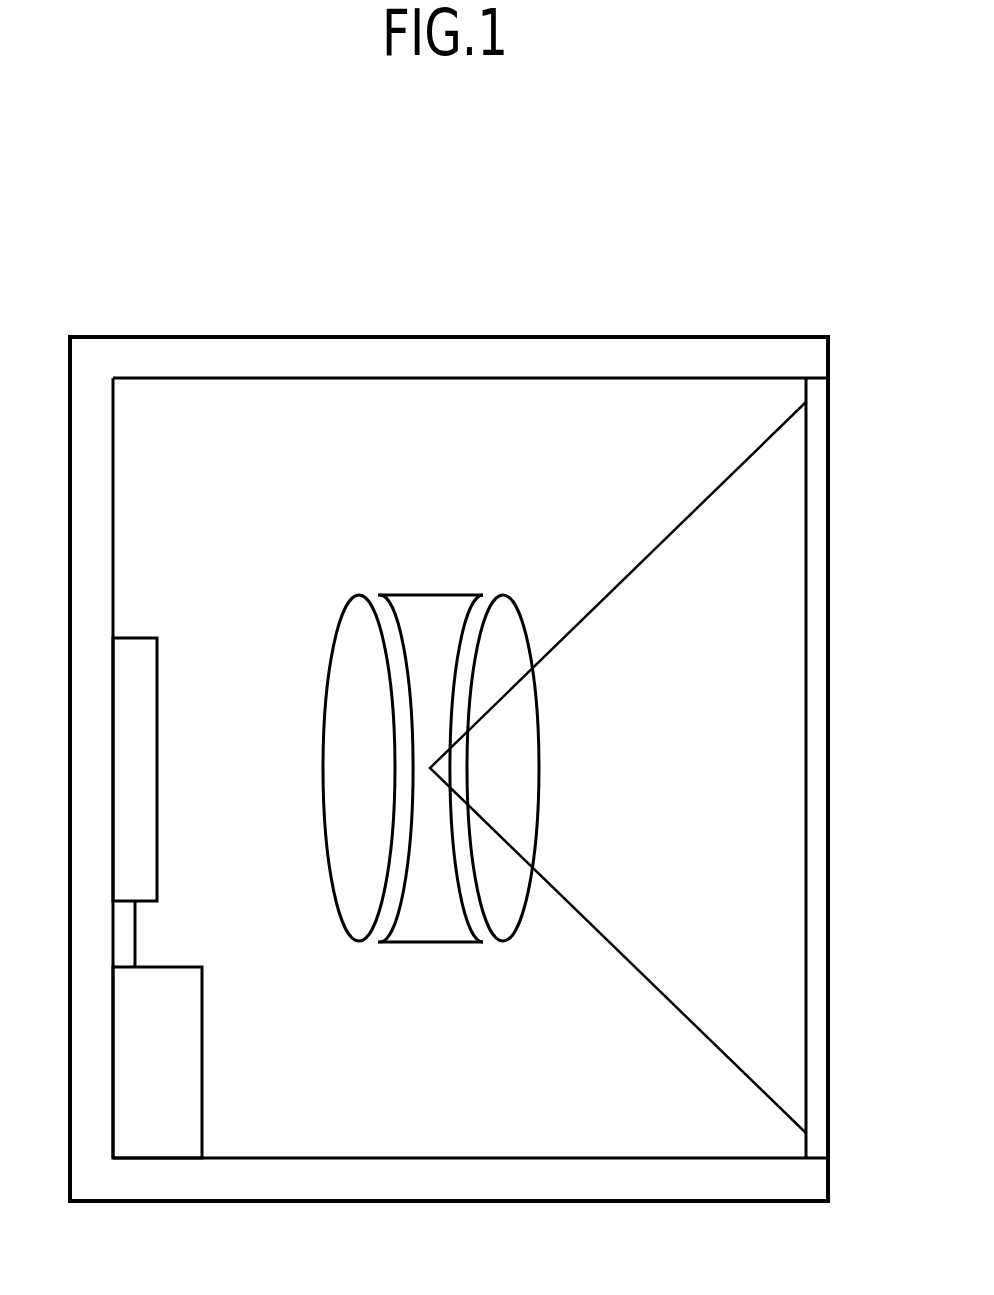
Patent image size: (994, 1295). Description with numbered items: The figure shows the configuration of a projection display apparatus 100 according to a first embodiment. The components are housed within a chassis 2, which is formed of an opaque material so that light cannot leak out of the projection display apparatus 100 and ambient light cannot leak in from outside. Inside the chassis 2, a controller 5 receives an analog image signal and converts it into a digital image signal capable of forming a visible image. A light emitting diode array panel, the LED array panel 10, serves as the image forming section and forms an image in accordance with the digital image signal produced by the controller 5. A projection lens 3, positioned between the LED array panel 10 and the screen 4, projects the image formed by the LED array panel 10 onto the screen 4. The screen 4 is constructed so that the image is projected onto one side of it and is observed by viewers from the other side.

The projection display apparatus 100 is at (420, 246).
The chassis 2 is at (630, 350).
The screen 4 is at (817, 482).
The projection lens 3 is at (322, 562).
The LED array panel 10 is at (137, 637).
The controller 5 is at (204, 1099).